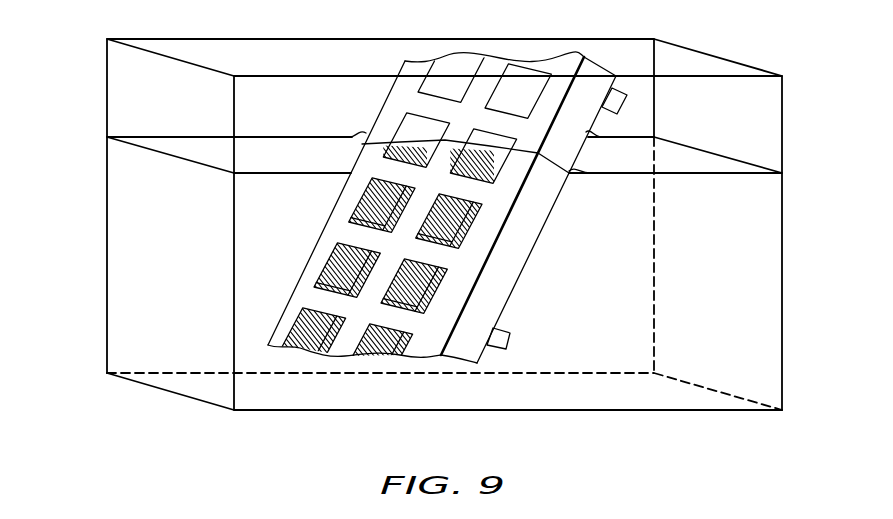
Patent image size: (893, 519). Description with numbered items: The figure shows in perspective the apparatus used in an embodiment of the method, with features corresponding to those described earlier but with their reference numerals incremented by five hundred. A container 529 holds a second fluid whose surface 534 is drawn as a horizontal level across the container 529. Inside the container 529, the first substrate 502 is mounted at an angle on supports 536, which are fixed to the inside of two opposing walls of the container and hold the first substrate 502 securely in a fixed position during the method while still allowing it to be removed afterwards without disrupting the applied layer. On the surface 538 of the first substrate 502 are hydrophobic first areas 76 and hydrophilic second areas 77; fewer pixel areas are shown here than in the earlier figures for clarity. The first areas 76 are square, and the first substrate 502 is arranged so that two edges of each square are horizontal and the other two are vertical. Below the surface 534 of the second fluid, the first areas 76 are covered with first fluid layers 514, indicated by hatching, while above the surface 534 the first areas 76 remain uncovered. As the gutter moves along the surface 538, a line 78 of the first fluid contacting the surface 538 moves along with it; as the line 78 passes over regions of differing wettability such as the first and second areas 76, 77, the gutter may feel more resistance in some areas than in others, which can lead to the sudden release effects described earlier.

The container 529 is at (124, 255).
The surface of the second fluid 534 is at (243, 147).
The first substrate 502 is at (548, 216).
The surface of the first substrate 538 is at (538, 114).
The supports 536 is at (627, 99).
The first fluid layers 514 is at (320, 333).
The hydrophilic second areas 77 is at (432, 350).
The hydrophobic first areas 76 is at (525, 68).
The line of the first fluid 78 is at (418, 133).